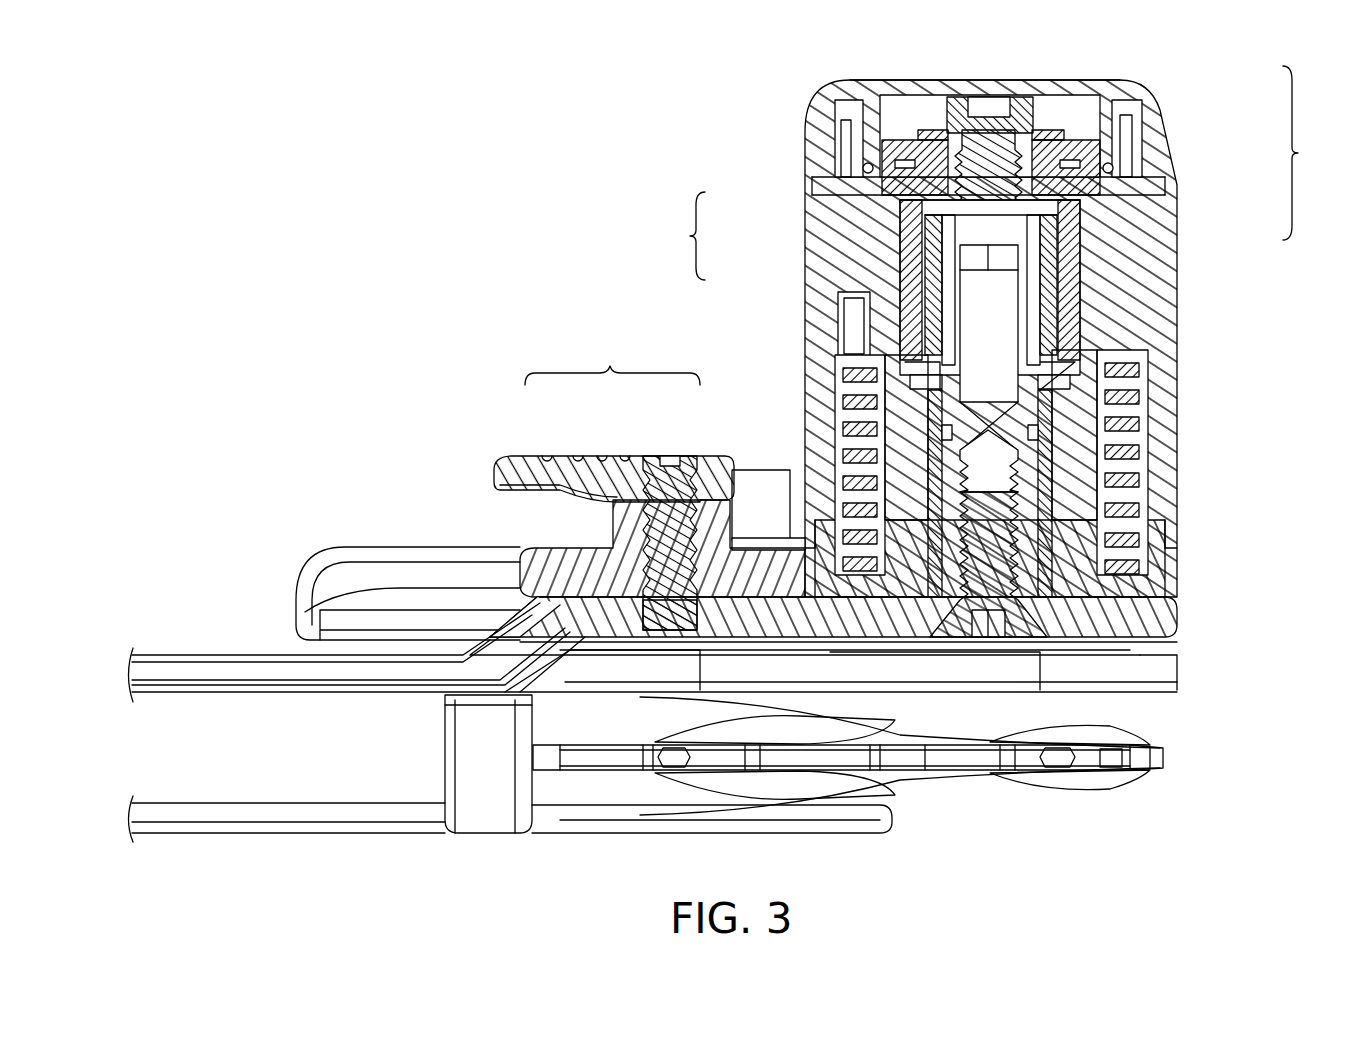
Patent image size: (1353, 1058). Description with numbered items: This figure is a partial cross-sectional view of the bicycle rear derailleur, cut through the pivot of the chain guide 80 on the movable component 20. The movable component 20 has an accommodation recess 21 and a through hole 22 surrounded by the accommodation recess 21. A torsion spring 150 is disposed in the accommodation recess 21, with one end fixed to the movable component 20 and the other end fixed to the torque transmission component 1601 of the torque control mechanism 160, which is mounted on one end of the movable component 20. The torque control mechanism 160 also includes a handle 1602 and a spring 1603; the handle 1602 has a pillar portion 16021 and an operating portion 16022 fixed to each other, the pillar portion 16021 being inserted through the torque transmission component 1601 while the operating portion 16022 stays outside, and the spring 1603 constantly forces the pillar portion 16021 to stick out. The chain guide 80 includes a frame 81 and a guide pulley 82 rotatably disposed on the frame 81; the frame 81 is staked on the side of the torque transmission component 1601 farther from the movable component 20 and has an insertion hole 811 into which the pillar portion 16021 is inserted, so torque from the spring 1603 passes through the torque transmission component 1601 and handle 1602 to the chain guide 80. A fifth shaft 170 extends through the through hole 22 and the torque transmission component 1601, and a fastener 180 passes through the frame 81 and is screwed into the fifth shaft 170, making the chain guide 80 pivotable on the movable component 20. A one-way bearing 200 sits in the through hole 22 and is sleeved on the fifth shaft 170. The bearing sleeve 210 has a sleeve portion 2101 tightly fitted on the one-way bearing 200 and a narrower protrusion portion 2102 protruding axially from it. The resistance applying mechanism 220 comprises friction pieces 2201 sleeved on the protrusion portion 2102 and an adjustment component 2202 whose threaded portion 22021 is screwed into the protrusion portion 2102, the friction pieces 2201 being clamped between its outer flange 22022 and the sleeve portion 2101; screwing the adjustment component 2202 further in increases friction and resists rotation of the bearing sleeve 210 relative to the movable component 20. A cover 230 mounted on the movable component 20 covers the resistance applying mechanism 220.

The movable component 20 is at (1163, 278).
The accommodation recess 21 is at (1142, 440).
The through hole 22 is at (1075, 360).
The chain guide 80 is at (458, 845).
The frame 81 is at (187, 660).
The guide pulley 82 is at (925, 790).
The torsion spring 150 is at (1135, 372).
The torque control mechanism 160 is at (550, 490).
The fifth shaft 170 is at (1027, 482).
The fastener 180 is at (988, 540).
The one-way bearing 200 is at (910, 320).
The bearing sleeve 210 is at (672, 236).
The resistance applying mechanism 220 is at (1313, 153).
The cover 230 is at (1052, 80).
The insertion hole 811 is at (641, 640).
The torque transmission component 1601 is at (545, 555).
The handle 1602 is at (614, 485).
The spring 1603 is at (728, 500).
The sleeve portion 2101 is at (910, 270).
The protrusion portion 2102 is at (912, 232).
The friction pieces 2201 is at (1110, 148).
The adjustment component 2202 is at (1045, 113).
The pillar portion 16021 is at (668, 458).
The operating portion 16022 is at (583, 458).
The threaded portion 22021 is at (990, 130).
The outer flange 22022 is at (930, 135).